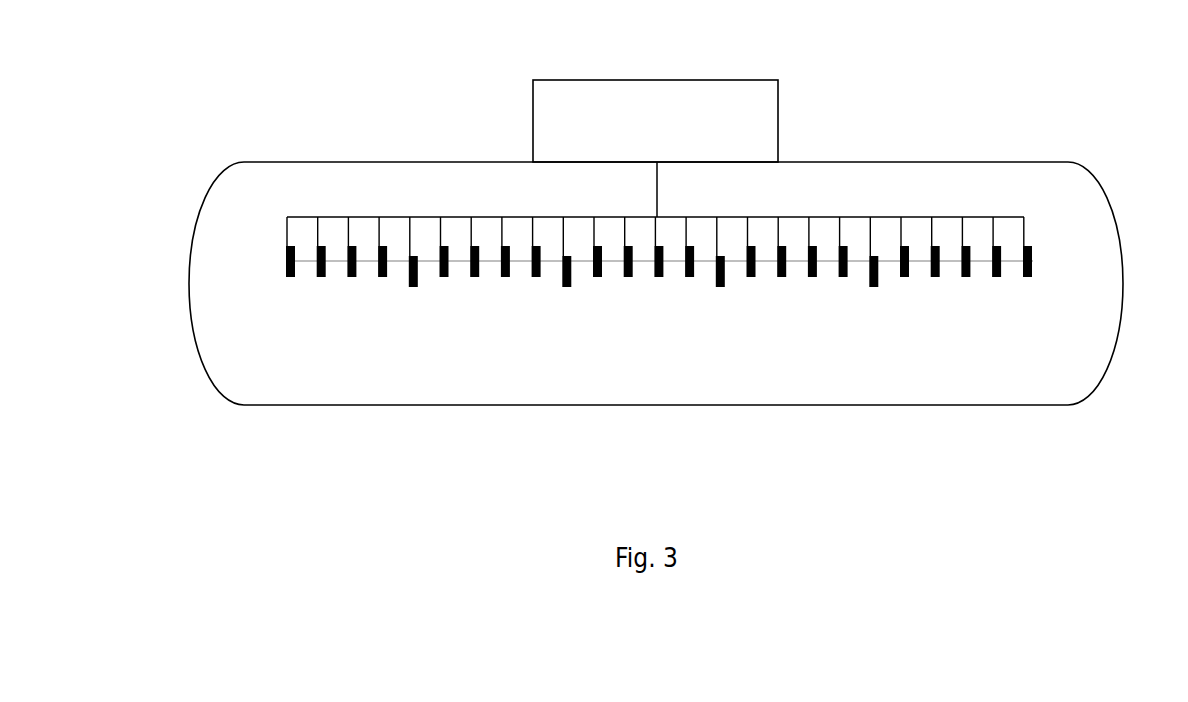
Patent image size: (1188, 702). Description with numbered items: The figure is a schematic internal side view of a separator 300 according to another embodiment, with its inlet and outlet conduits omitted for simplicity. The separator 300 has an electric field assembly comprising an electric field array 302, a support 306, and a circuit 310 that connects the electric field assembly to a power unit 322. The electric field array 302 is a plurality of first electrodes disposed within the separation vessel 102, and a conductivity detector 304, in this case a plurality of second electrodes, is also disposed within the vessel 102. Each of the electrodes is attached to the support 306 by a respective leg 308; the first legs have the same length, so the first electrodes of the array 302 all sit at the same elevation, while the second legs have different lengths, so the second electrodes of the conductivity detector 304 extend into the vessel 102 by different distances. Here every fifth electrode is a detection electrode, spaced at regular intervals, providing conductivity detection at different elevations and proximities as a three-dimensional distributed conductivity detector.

The separator 300 is at (216, 72).
The separation vessel 102 is at (1102, 188).
The power unit 322 is at (675, 136).
The circuit 310 is at (655, 188).
The electric field array 302 is at (323, 300).
The support 306 is at (863, 218).
The leg 308 is at (286, 238).
The conductivity detector 304 is at (417, 290).